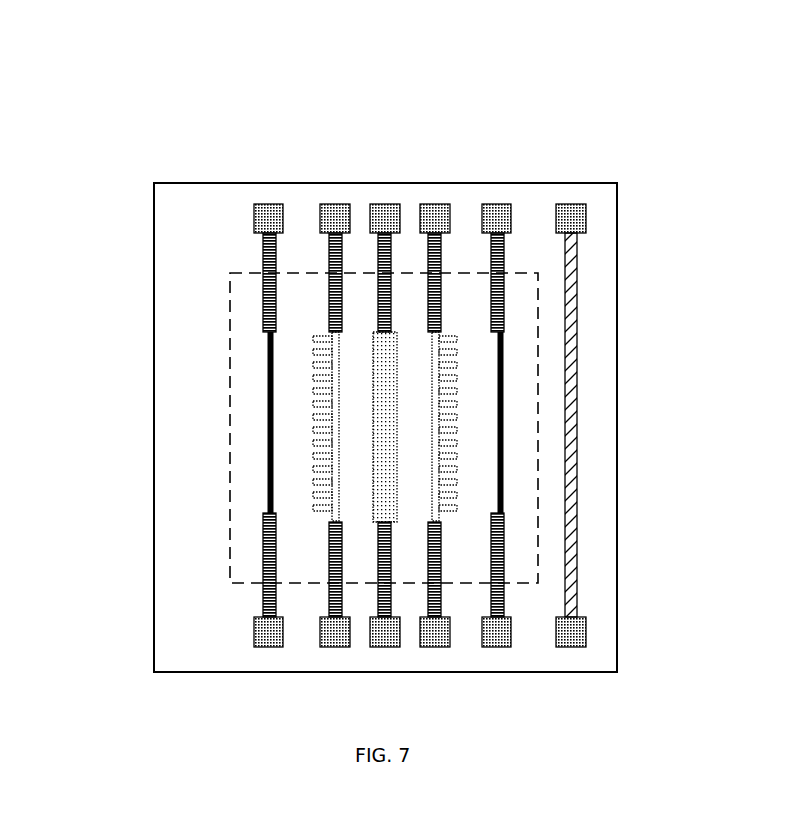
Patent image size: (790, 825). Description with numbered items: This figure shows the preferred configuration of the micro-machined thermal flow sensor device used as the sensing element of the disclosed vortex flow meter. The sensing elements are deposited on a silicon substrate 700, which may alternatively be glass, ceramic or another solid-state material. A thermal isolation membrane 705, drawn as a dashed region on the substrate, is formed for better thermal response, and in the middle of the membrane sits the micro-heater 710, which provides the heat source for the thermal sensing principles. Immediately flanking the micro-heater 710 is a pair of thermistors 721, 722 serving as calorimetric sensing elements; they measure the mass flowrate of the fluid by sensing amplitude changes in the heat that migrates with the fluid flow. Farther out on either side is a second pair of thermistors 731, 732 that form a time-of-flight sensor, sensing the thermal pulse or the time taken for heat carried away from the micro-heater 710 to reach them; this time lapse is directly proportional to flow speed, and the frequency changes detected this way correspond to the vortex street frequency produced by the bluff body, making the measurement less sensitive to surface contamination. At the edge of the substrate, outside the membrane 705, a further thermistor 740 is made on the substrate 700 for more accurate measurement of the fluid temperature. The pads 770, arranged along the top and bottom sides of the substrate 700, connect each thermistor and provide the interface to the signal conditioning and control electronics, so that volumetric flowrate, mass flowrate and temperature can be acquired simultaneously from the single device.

The silicon substrate 700 is at (205, 565).
The thermal isolation membrane 705 is at (247, 470).
The micro-heater 710 is at (394, 340).
The thermistor 721 is at (320, 332).
The thermistor 722 is at (449, 340).
The thermistor 731 is at (265, 383).
The thermistor 732 is at (502, 378).
The thermistor 740 is at (577, 363).
The pads 770 is at (253, 203).